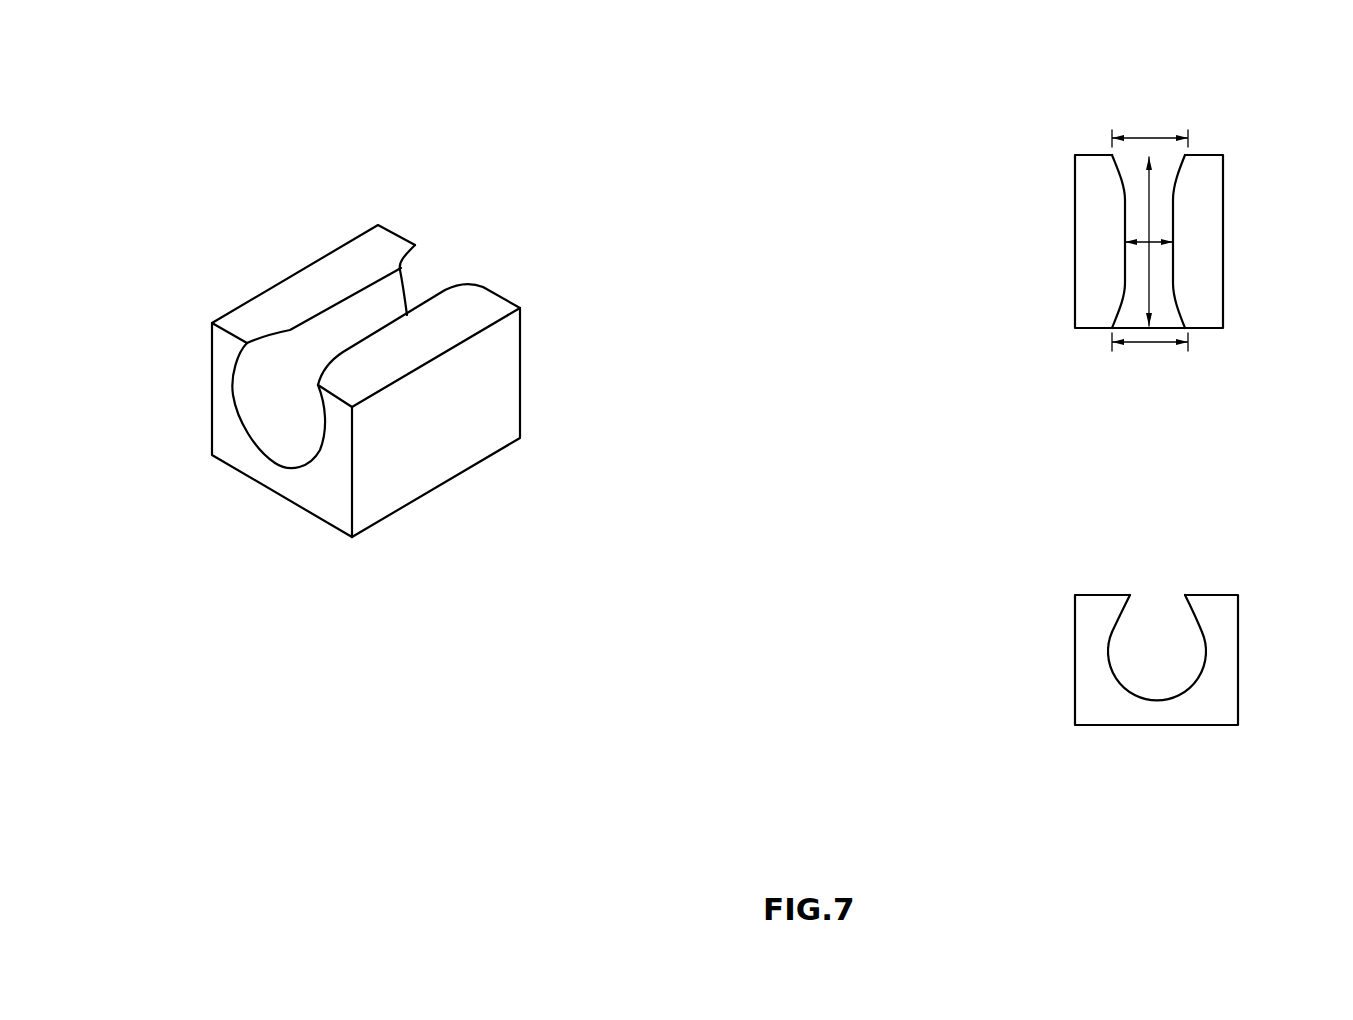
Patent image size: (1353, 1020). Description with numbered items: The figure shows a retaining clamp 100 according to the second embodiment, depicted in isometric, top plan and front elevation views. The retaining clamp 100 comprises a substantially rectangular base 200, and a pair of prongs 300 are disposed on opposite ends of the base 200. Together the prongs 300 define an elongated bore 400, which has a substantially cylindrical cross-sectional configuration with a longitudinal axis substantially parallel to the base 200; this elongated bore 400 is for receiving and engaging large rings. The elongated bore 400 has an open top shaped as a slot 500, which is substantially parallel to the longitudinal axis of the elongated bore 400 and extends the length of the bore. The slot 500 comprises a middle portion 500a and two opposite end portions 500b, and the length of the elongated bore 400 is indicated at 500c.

The retaining clamp 100 is at (312, 523).
The base 200 is at (448, 487).
The prongs 300 is at (308, 288).
The elongated bore 400 is at (277, 427).
The slot 500 is at (360, 308).
The middle portion 500a is at (1155, 238).
The end portions 500b is at (1148, 133).
The length of elongated bore 500c is at (1148, 177).